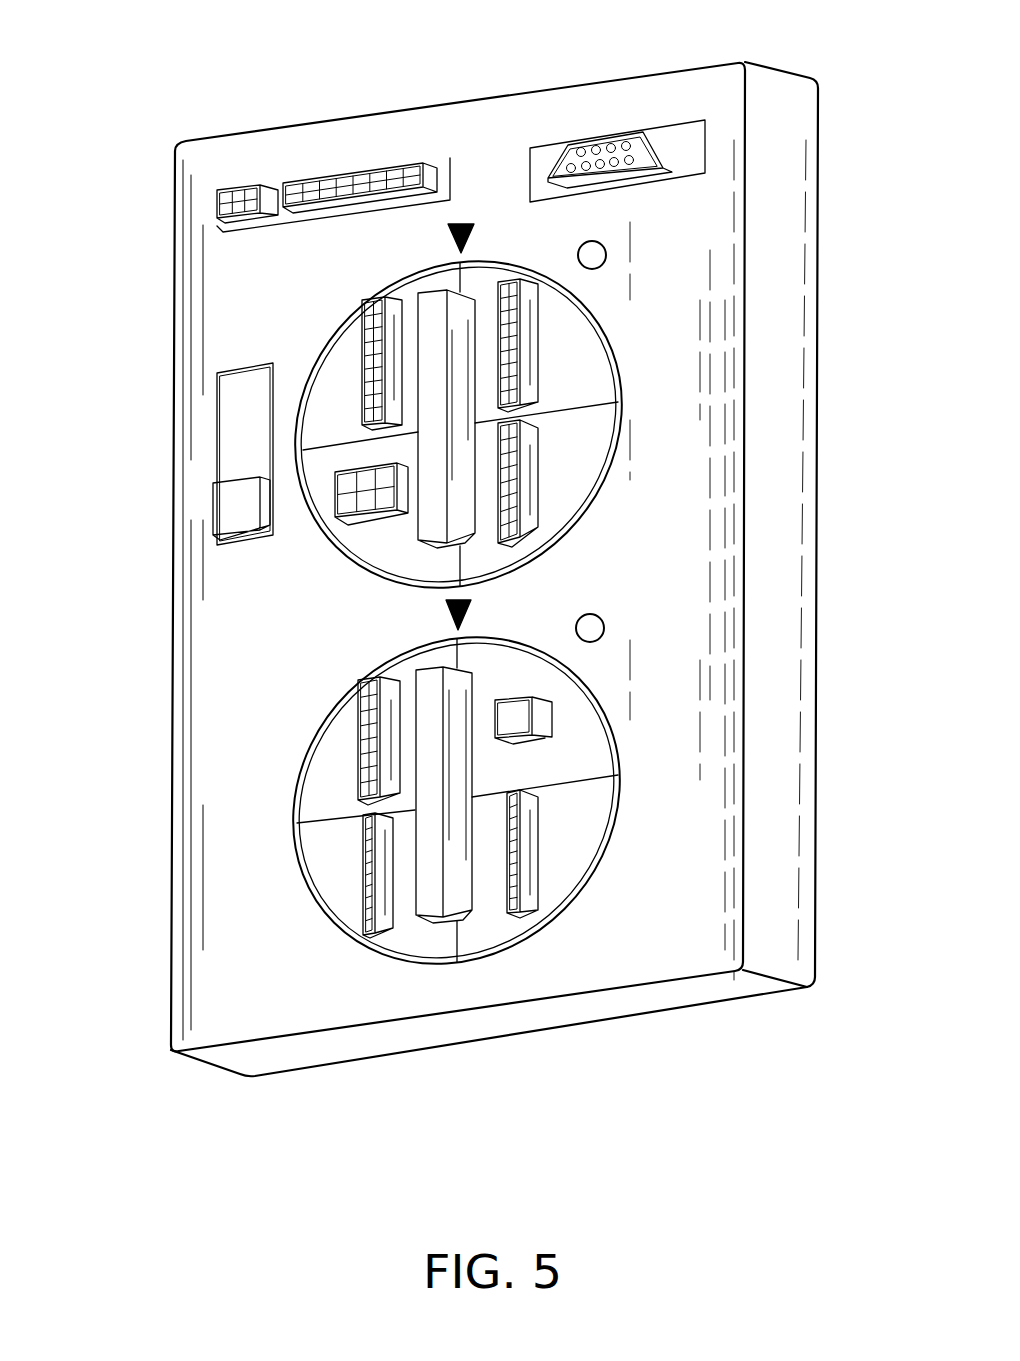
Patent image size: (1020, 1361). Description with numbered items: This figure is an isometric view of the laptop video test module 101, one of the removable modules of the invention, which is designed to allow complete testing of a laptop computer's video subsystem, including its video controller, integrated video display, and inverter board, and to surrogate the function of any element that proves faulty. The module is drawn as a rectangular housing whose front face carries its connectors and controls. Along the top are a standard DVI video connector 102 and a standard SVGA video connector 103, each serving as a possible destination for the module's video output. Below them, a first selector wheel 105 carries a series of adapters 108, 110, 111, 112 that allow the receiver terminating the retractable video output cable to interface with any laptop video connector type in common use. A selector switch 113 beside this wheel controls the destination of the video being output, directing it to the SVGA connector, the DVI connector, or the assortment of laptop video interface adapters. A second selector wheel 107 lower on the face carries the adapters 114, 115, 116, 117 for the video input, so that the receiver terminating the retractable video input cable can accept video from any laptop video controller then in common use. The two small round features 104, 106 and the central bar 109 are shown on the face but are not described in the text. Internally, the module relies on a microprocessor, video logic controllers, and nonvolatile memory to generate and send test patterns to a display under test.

The laptop video test module 101 is at (423, 107).
The DVI video connector 102 is at (303, 177).
The SVGA video connector 103 is at (667, 152).
The opening 104 is at (607, 252).
The selector wheel 105 is at (620, 428).
The opening 106 is at (603, 640).
The selector wheel 107 is at (570, 905).
The video output adapter 108 is at (360, 355).
The central bar 109 is at (428, 300).
The video output adapter 110 is at (533, 323).
The video output adapter 111 is at (343, 518).
The video output adapter 112 is at (530, 497).
The selector switch 113 is at (228, 494).
The video input adapter 114 is at (355, 750).
The video input adapter 115 is at (428, 672).
The video input adapter 116 is at (545, 723).
The video input adapter 117 is at (365, 853).